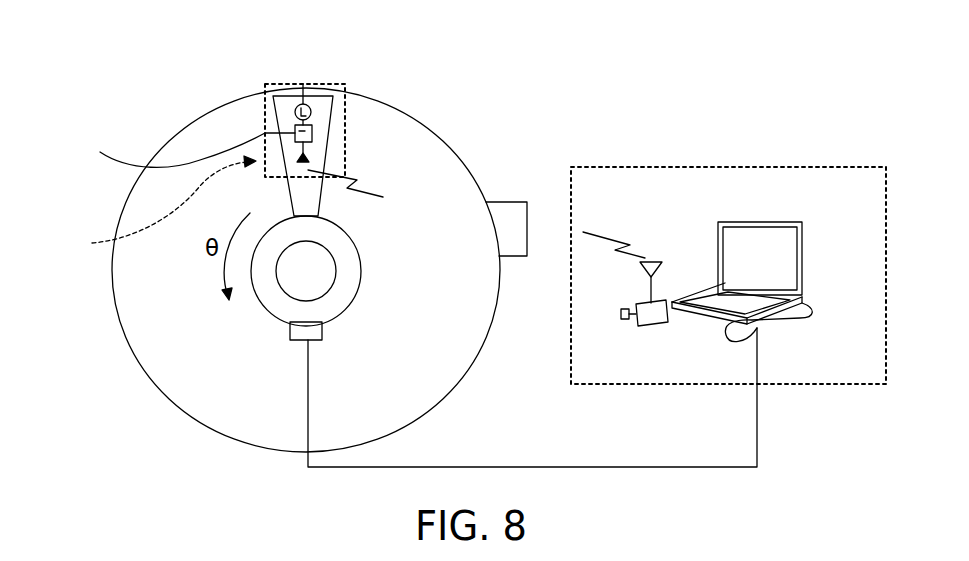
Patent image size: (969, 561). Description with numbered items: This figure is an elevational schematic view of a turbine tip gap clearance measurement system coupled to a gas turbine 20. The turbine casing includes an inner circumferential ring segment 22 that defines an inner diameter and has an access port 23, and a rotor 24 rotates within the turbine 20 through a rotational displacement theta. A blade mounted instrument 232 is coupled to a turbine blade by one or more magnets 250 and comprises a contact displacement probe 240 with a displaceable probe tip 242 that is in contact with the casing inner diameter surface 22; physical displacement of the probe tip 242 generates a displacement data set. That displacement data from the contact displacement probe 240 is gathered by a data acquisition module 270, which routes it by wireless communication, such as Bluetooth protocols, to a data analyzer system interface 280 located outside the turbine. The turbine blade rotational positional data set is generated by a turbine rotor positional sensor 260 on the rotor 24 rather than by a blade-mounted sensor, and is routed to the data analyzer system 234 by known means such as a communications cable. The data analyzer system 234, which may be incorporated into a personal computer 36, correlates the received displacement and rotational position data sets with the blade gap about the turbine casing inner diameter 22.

The gas turbine 20 is at (173, 441).
The inner circumferential ring segment 22 is at (132, 337).
The access port 23 is at (508, 208).
The rotor 24 is at (348, 267).
The personal computer 36 is at (767, 239).
The blade mounted instrument 232 is at (149, 206).
The data analyzer system 234 is at (713, 167).
The contact displacement probe 240 is at (345, 100).
The displaceable probe tip 242 is at (296, 92).
The magnets 250 is at (265, 130).
The turbine rotor positional sensor 260 is at (322, 328).
The data acquisition module 270 is at (174, 150).
The data analyzer system interface 280 is at (660, 326).